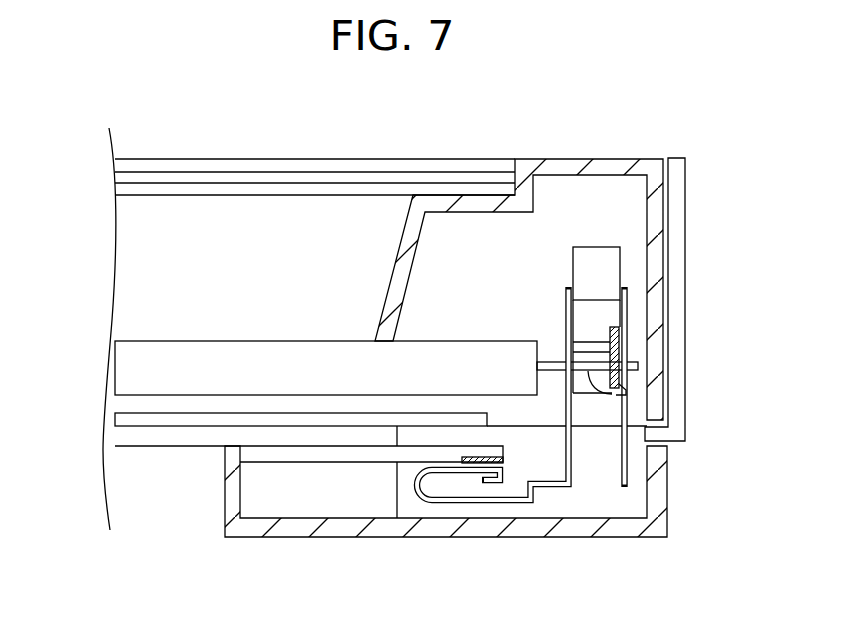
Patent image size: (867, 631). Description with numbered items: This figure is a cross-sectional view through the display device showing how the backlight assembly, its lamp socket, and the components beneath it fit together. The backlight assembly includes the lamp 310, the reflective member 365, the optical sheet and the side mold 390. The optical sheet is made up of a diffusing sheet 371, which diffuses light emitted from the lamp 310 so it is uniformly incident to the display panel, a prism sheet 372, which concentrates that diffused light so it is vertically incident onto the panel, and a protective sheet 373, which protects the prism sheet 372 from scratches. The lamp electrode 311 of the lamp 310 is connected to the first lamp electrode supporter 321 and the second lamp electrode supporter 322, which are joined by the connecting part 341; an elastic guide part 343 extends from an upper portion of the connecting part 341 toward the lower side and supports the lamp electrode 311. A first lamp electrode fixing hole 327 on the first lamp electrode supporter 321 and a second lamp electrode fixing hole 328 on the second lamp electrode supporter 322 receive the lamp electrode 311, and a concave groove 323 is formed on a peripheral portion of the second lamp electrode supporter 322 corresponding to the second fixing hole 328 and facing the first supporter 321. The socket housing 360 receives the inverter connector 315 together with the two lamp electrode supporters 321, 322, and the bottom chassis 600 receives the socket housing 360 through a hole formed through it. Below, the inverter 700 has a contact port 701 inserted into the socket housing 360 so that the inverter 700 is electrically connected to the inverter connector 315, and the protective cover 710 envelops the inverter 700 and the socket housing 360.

The lamp 310 is at (148, 398).
The lamp electrode 311 is at (615, 400).
The inverter connector 315 is at (480, 503).
The first lamp electrode supporter 321 is at (567, 313).
The second lamp electrode supporter 322 is at (630, 290).
The concave groove 323 is at (618, 345).
The first lamp electrode fixing hole 327 is at (562, 374).
The second lamp electrode fixing hole 328 is at (625, 381).
The connecting part 341 is at (580, 330).
The elastic guide part 343 is at (610, 261).
The socket housing 360 is at (597, 460).
The reflective member 365 is at (203, 420).
The diffusing sheet 371 is at (117, 190).
The prism sheet 372 is at (117, 177).
The protective sheet 373 is at (117, 163).
The side mold 390 is at (584, 168).
The bottom chassis 600 is at (120, 437).
The inverter 700 is at (381, 458).
The contact port 701 is at (464, 463).
The protective cover 710 is at (319, 528).